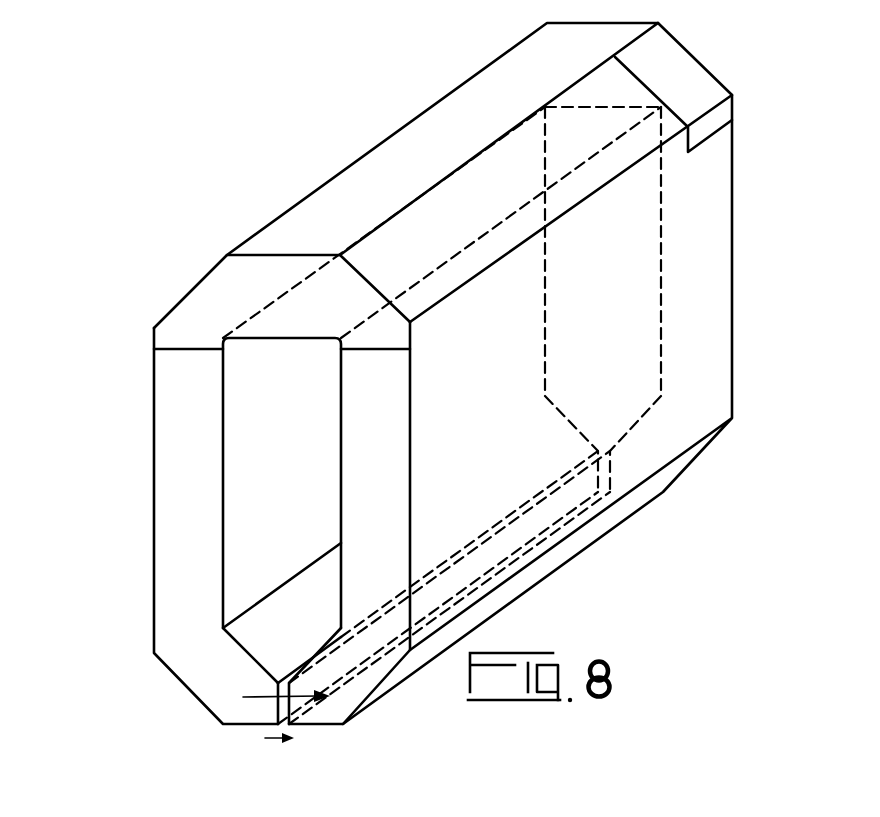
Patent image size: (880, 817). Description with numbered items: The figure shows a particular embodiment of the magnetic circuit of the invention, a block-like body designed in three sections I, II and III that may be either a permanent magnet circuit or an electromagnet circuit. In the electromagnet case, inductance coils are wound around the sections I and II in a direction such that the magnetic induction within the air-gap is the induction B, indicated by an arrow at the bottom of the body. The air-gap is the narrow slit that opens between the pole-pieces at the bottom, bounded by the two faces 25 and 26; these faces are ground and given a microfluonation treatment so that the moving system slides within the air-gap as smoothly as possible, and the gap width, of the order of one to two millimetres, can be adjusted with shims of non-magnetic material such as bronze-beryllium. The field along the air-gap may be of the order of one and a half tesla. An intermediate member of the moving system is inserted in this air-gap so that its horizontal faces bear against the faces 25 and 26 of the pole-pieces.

The first section of magnetic circuit I is at (167, 533).
The second section of magnetic circuit II is at (712, 322).
The third section of magnetic circuit III is at (207, 302).
The pole-piece face 25 is at (247, 727).
The pole-piece face 26 is at (325, 727).
The magnetic induction B is at (279, 751).